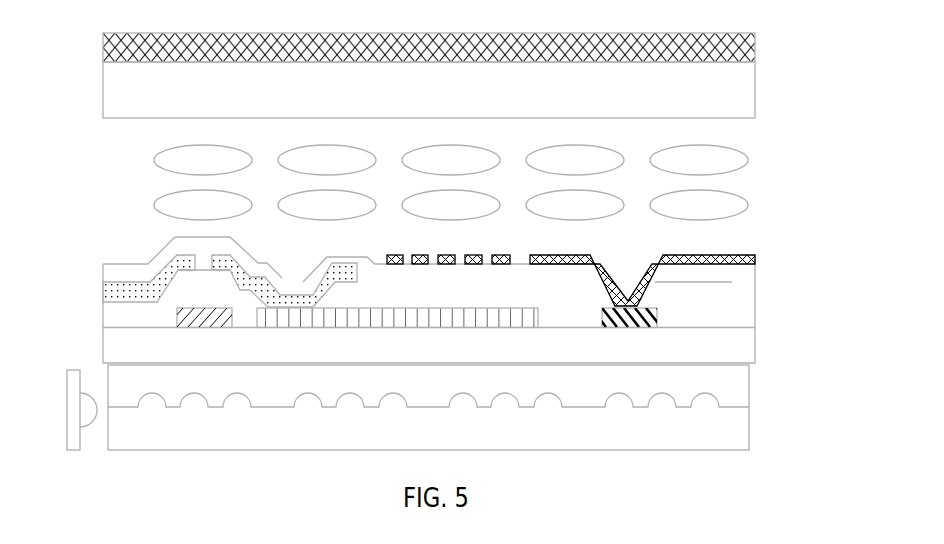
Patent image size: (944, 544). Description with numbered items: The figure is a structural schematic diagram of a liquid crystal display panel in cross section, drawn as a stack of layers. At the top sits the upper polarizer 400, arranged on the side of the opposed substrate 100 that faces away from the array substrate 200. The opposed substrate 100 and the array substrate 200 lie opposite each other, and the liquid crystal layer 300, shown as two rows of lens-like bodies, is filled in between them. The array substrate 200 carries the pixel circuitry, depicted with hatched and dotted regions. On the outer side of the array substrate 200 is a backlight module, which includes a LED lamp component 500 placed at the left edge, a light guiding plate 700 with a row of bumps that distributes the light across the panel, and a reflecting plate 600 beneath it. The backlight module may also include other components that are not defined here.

The opposed substrate 100 is at (733, 90).
The array substrate 200 is at (778, 255).
The liquid crystal layer 300 is at (778, 135).
The upper polarizer 400 is at (732, 44).
The LED lamp component 500 is at (67, 397).
The reflecting plate 600 is at (749, 435).
The light guiding plate 700 is at (749, 391).